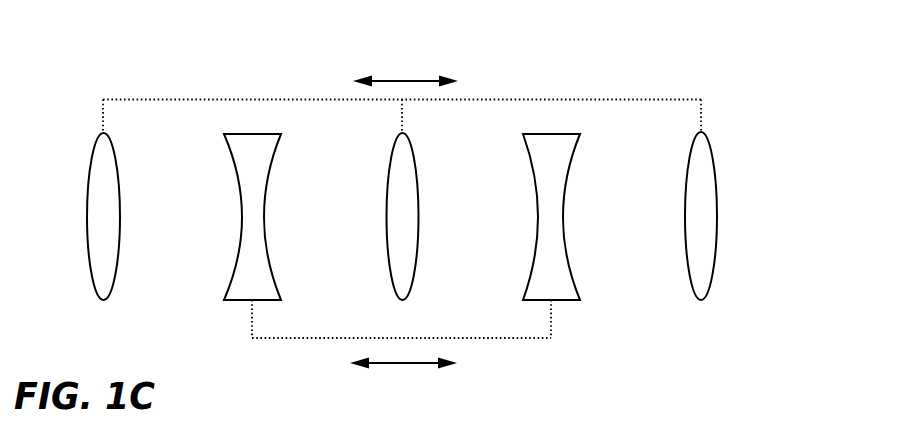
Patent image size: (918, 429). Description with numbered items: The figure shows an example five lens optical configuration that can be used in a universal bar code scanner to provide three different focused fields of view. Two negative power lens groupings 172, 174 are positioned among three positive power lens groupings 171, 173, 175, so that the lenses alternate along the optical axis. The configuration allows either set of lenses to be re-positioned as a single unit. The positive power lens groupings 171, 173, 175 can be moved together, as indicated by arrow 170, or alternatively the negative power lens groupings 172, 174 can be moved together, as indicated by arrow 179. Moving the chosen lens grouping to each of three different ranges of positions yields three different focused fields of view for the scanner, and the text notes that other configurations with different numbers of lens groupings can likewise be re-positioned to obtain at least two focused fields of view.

The arrow 170 is at (425, 78).
The positive power lens grouping 171 is at (85, 190).
The negative power lens grouping 172 is at (235, 192).
The positive power lens grouping 173 is at (383, 200).
The negative power lens grouping 174 is at (533, 200).
The positive power lens grouping 175 is at (683, 190).
The arrow 179 is at (423, 367).